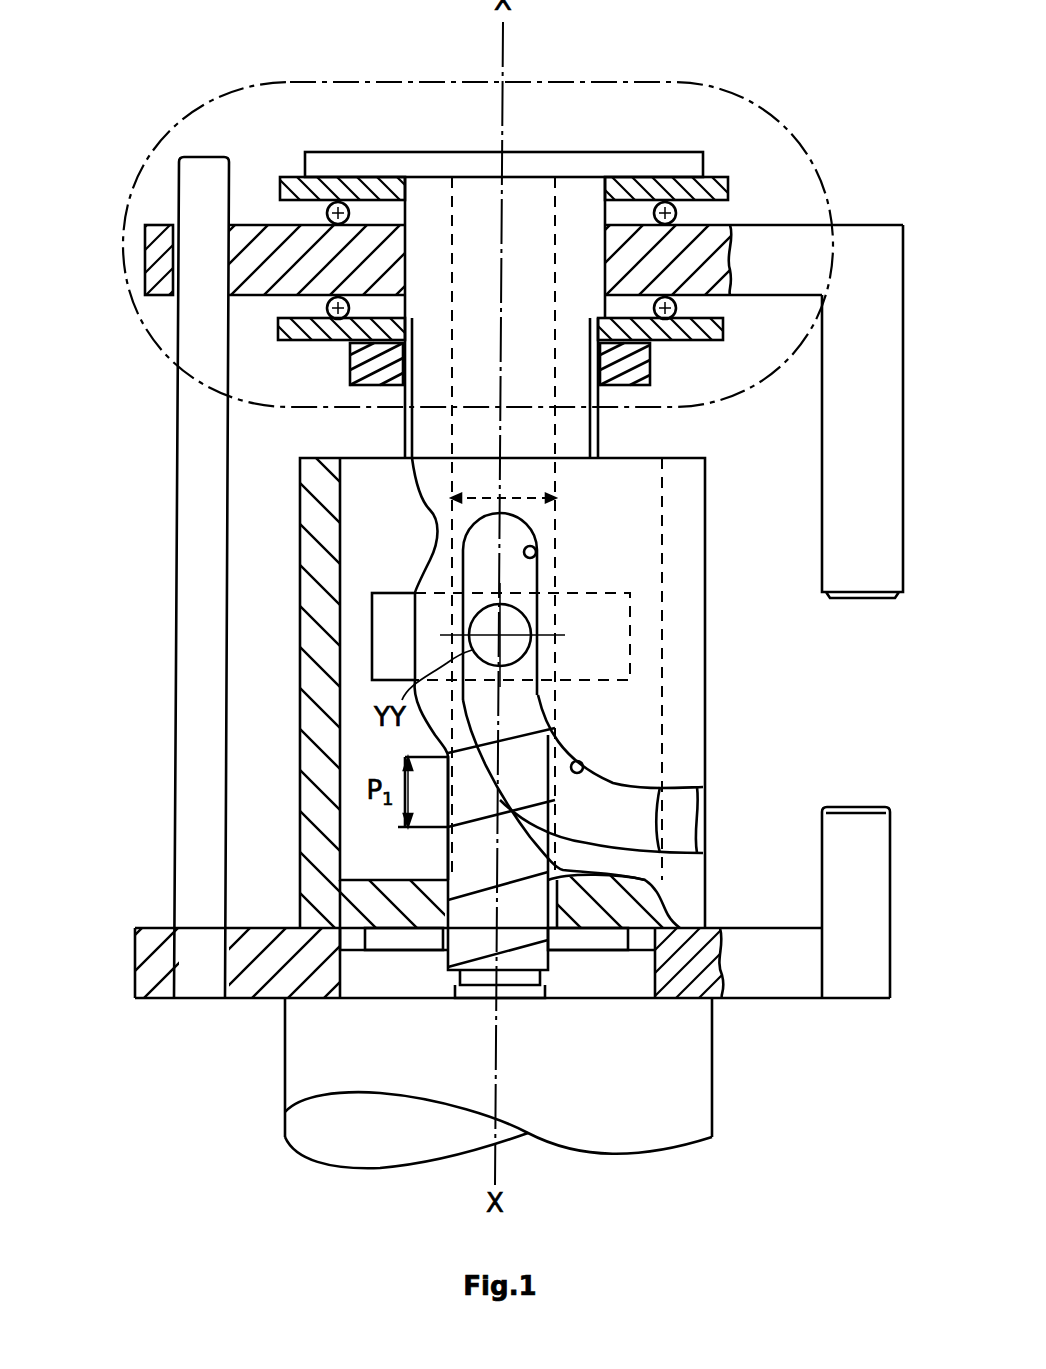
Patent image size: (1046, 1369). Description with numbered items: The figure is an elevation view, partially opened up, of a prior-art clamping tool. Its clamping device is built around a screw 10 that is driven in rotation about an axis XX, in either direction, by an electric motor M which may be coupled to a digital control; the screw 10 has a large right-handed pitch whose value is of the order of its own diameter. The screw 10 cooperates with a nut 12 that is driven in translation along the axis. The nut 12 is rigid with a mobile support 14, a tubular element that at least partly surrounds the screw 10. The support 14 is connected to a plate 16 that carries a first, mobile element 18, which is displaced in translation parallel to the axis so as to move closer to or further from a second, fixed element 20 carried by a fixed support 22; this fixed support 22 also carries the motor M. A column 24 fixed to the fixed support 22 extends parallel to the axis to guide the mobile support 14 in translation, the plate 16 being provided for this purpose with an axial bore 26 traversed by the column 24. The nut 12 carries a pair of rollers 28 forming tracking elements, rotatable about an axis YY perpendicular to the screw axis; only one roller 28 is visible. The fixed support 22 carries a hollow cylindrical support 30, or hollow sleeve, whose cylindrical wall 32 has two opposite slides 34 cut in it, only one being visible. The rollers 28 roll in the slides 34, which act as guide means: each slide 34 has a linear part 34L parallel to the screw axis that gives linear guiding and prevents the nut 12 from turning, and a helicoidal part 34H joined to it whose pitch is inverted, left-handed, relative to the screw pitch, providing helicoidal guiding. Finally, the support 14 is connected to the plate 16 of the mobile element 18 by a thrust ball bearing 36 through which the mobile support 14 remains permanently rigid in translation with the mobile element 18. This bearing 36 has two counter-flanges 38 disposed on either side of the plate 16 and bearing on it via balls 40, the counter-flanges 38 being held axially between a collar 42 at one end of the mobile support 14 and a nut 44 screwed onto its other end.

The screw 10 is at (440, 860).
The nut 12 is at (372, 622).
The support 14 is at (403, 443).
The plate 16 is at (790, 222).
The first element 18 is at (872, 560).
The second element 20 is at (849, 826).
The fixed support 22 is at (752, 1010).
The column 24 is at (178, 505).
The axial bore 26 is at (175, 283).
The rollers 28 is at (528, 648).
The hollow cylindrical support 30 is at (295, 843).
The cylindrical wall 32 is at (316, 784).
The slides 34 is at (543, 741).
The linear part 34L is at (536, 556).
The helicoidal part 34H is at (583, 763).
The thrust ball bearing 36 is at (712, 85).
The counter-flanges 38 is at (733, 195).
The balls 40 is at (330, 208).
The collar 42 is at (382, 168).
The nut 44 is at (350, 378).
The electric motor M is at (720, 1096).